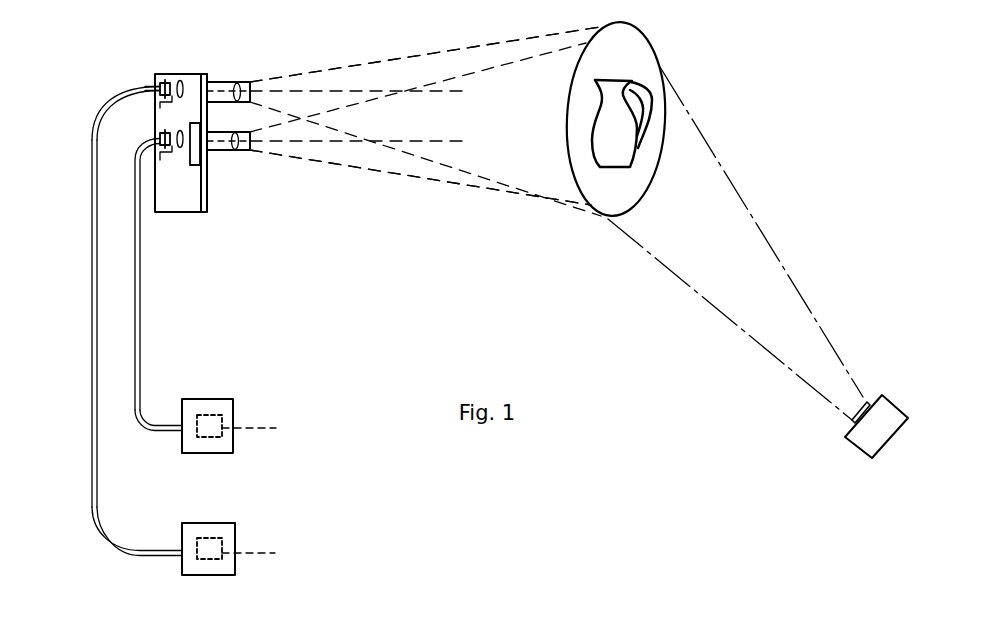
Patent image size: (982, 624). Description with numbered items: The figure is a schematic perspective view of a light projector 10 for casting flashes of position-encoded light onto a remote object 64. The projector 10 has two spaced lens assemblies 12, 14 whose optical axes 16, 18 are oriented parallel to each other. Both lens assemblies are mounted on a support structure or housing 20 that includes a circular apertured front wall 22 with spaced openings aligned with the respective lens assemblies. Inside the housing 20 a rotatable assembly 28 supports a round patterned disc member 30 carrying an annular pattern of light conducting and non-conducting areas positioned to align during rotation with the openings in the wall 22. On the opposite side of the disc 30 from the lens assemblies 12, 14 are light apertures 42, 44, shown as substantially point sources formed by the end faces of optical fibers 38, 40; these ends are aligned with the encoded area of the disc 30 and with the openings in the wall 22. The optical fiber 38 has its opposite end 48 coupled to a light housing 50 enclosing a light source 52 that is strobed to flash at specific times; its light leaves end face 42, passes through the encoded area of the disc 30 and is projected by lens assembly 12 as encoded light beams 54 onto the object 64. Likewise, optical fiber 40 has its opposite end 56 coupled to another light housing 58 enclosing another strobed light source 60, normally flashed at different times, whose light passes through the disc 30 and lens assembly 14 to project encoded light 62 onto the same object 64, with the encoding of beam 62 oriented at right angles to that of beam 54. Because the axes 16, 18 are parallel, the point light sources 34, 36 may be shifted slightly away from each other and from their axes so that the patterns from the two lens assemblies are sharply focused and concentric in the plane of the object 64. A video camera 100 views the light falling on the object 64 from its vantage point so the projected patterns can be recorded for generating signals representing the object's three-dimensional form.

The light projector 10 is at (235, 240).
The lens assembly 12 is at (246, 82).
The lens assembly 14 is at (230, 152).
The optical axis 16 is at (318, 85).
The optical axis 18 is at (327, 143).
The housing 20 is at (203, 73).
The apertured front wall 22 is at (208, 72).
The rotatable assembly 28 is at (190, 123).
The patterned disc member 30 is at (198, 82).
The light source 34 is at (126, 90).
The light source 36 is at (152, 157).
The optical fiber 38 is at (93, 128).
The optical fiber 40 is at (137, 148).
The light aperture 42 is at (176, 89).
The light aperture 44 is at (180, 150).
The opposite end 48 is at (175, 557).
The light housing 50 is at (210, 523).
The light source 52 is at (262, 557).
The light beam 54 is at (358, 63).
The opposite end 56 is at (170, 432).
The light housing 58 is at (215, 399).
The light source 60 is at (263, 430).
The encoded light 62 is at (448, 188).
The remote object 64 is at (622, 92).
The video camera 100 is at (858, 448).